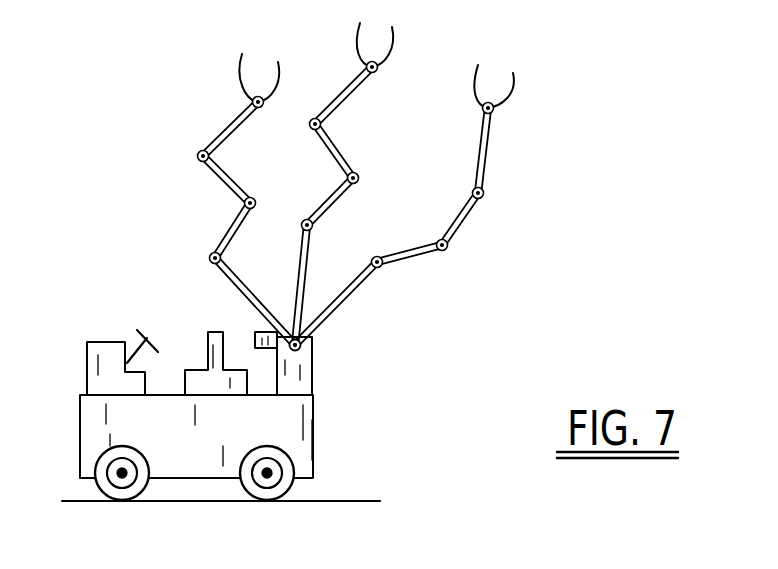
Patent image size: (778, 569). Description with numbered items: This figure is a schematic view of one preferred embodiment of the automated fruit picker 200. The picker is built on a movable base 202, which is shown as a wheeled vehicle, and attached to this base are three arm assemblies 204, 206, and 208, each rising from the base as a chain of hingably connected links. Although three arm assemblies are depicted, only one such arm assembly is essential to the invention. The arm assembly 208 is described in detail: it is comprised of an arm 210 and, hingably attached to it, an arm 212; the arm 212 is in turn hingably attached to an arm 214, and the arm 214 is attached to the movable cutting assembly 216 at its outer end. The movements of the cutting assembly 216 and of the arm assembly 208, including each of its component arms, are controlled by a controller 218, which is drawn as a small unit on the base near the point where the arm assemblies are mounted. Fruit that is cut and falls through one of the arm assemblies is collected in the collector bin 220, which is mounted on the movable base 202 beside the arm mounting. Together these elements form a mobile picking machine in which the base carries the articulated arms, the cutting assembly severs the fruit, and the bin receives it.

The automated fruit picker 200 is at (132, 143).
The movable base 202 is at (83, 420).
The arm assembly 204 is at (228, 192).
The arm assembly 206 is at (348, 150).
The arm assembly 208 is at (497, 195).
The arm 210 is at (360, 287).
The arm 212 is at (455, 232).
The arm 214 is at (487, 158).
The movable cutting assembly 216 is at (512, 85).
The controller 218 is at (253, 338).
The collector bin 220 is at (302, 376).